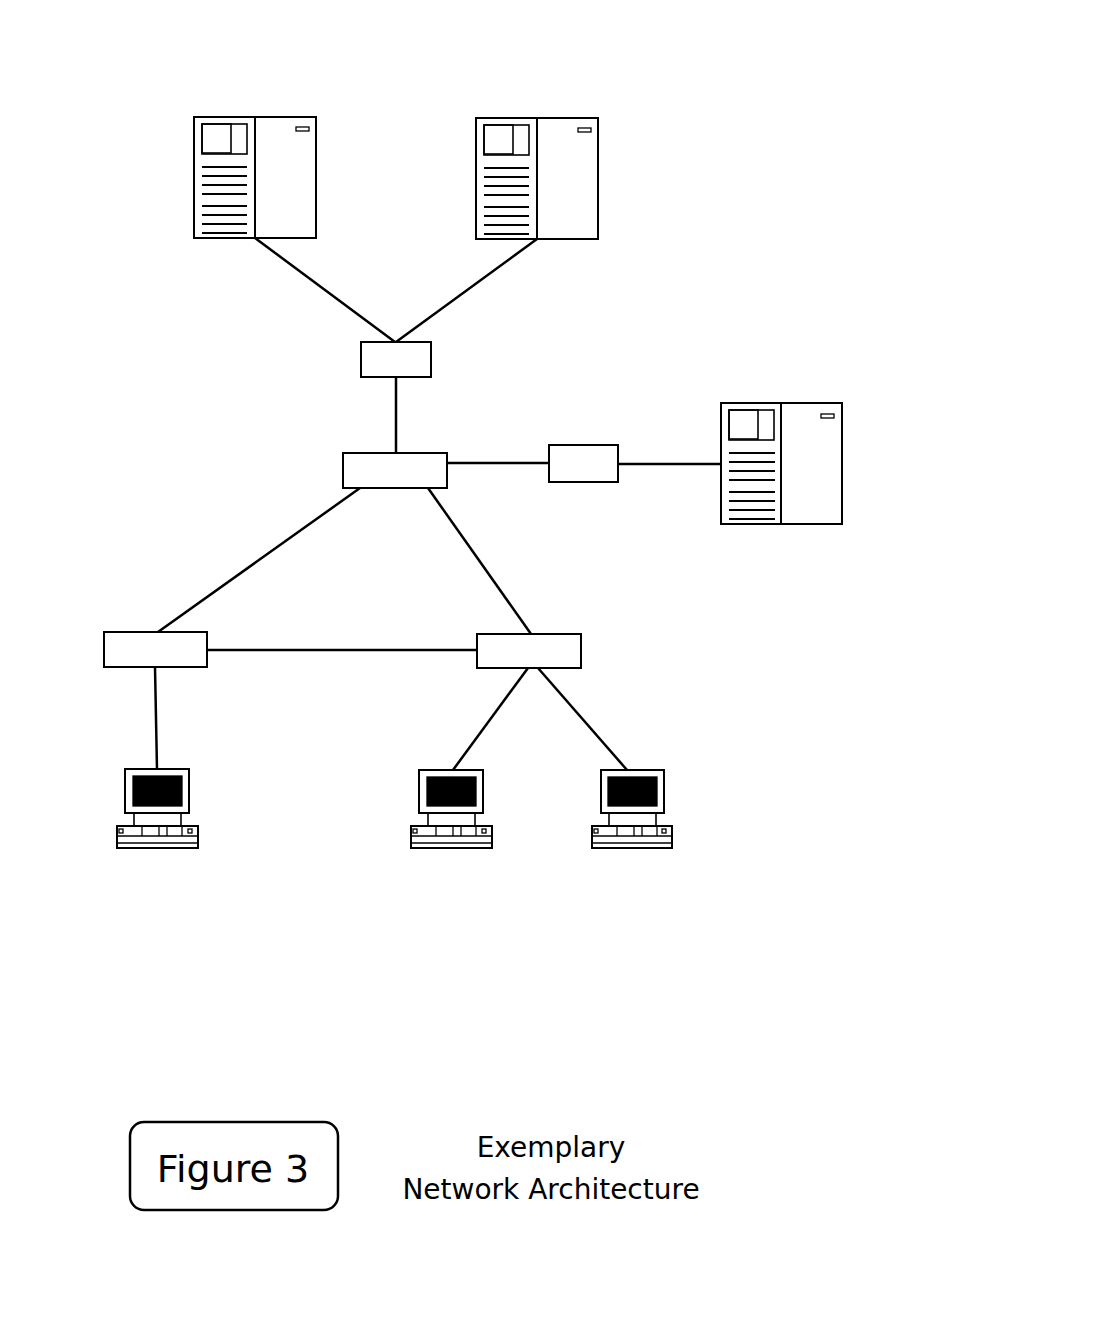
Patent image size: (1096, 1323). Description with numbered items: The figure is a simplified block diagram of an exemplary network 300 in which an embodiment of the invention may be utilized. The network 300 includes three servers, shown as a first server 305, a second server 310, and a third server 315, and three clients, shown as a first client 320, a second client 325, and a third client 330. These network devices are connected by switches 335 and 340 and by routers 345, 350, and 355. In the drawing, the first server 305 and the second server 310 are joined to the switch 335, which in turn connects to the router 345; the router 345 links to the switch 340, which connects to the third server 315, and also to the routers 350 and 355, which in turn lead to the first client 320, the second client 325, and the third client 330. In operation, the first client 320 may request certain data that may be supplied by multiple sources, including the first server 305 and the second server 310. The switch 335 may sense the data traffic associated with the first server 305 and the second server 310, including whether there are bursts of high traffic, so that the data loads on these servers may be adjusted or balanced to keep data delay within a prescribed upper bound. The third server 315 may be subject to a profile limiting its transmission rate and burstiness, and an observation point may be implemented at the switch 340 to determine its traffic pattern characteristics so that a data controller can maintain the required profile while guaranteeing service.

The network 300 is at (732, 106).
The first server 305 is at (255, 112).
The second server 310 is at (536, 113).
The third server 315 is at (780, 398).
The first client 320 is at (160, 856).
The second client 325 is at (455, 856).
The third client 330 is at (636, 856).
The switch 335 is at (357, 358).
The switch 340 is at (583, 441).
The router 345 is at (338, 470).
The router 350 is at (121, 626).
The router 355 is at (586, 650).